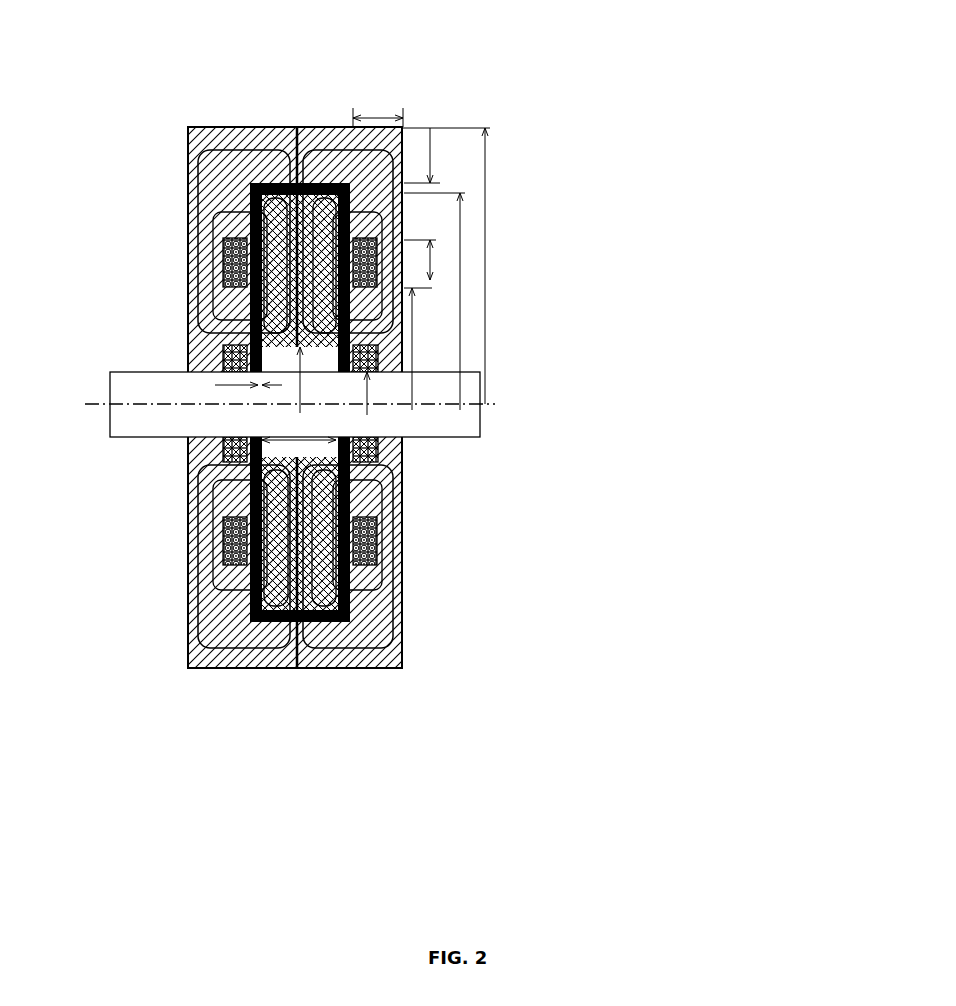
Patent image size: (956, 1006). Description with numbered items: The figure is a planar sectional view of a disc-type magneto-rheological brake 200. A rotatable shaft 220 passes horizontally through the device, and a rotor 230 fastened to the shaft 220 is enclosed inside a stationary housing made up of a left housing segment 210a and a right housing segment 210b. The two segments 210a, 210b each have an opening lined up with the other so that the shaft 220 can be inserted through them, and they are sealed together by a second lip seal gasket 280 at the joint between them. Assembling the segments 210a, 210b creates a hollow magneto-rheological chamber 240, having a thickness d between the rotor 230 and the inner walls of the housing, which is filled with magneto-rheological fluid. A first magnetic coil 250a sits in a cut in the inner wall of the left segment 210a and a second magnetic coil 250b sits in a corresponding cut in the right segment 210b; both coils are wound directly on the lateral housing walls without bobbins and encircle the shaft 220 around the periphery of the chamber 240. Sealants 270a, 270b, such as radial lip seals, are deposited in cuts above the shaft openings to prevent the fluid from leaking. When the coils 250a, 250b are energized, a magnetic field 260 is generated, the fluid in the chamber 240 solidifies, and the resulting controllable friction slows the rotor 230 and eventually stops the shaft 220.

The disc-type magneto-rheological brake 200 is at (518, 107).
The left housing segment 210a is at (203, 447).
The right housing segment 210b is at (305, 668).
The rotatable shaft 220 is at (147, 396).
The rotor 230 is at (257, 205).
The magneto-rheological chamber 240 is at (252, 612).
The first magnetic coil 250a is at (225, 279).
The second magnetic coil 250b is at (378, 280).
The magnetic field 260 is at (188, 243).
The sealant 270a is at (228, 355).
The sealant 270b is at (367, 443).
The second lip seal gasket 280 is at (297, 127).